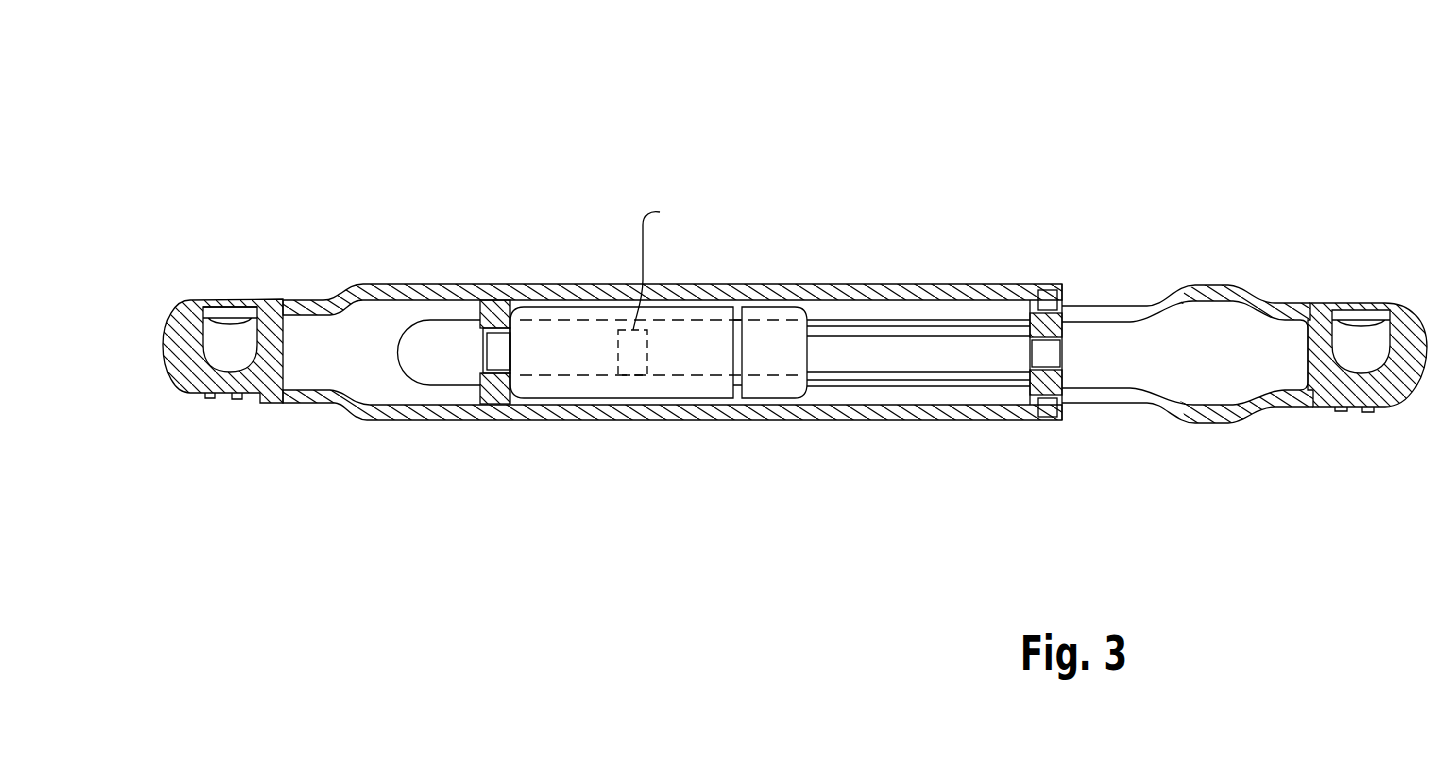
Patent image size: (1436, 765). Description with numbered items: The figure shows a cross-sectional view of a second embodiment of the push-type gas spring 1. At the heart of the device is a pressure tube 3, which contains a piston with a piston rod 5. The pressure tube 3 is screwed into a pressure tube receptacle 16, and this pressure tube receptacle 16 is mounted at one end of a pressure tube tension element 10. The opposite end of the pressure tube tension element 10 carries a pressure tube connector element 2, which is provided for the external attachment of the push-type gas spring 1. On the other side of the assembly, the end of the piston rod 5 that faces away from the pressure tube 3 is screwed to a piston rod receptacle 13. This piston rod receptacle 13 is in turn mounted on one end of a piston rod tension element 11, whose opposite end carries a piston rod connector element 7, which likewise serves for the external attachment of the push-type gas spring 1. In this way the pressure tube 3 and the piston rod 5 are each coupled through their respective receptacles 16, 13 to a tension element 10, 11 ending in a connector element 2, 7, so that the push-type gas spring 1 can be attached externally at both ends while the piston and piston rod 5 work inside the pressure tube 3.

The push-type gas spring 1 is at (350, 183).
The pressure tube connector element 2 is at (1398, 365).
The pressure tube 3 is at (597, 370).
The piston rod 5 is at (893, 345).
The piston rod connector element 7 is at (190, 367).
The pressure tube tension element 10 is at (1085, 318).
The piston rod tension element 11 is at (457, 410).
The piston rod receptacle 13 is at (1062, 395).
The pressure tube receptacle 16 is at (495, 312).